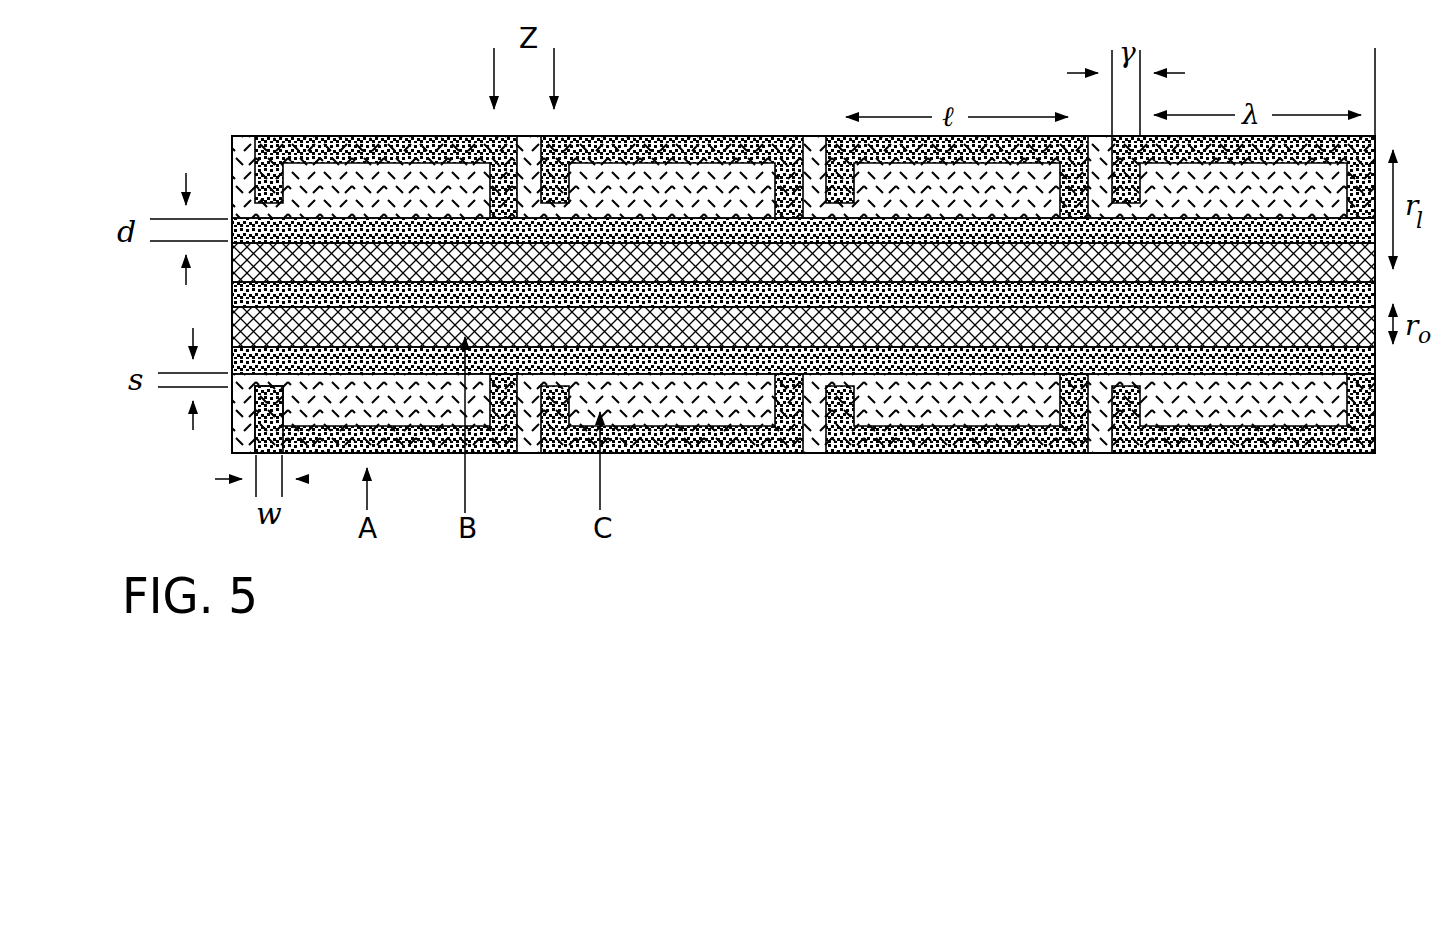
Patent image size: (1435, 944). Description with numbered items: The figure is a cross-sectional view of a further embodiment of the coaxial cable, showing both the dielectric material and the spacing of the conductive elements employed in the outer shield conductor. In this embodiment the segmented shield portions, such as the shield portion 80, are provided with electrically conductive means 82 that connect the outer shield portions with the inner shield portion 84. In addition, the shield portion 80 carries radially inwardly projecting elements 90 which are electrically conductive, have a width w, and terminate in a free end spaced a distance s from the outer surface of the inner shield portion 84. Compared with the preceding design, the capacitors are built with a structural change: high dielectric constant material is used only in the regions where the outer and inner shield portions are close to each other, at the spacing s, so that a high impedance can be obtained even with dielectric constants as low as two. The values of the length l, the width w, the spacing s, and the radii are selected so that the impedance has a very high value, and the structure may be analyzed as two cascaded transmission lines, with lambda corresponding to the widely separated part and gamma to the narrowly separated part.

The segmented outer shield portion 80 is at (417, 455).
The electrically conductive means 82 is at (527, 380).
The inner shield portion 84 is at (257, 357).
The radially inwardly projecting element 90 is at (257, 410).